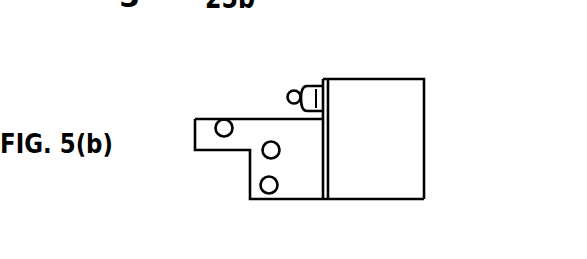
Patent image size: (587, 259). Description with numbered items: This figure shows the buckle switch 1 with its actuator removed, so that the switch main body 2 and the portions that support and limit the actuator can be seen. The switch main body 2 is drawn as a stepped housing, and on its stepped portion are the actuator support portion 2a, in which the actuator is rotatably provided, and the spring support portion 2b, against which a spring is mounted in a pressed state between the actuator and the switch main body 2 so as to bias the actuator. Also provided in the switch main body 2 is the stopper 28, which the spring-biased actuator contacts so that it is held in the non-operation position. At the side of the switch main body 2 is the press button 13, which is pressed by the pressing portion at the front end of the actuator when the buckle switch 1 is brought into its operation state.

The buckle switch 1 is at (407, 65).
The switch main body 2 is at (393, 189).
The actuator support portion 2a is at (263, 155).
The spring support portion 2b is at (270, 193).
The press button 13 is at (289, 92).
The stopper 28 is at (229, 120).